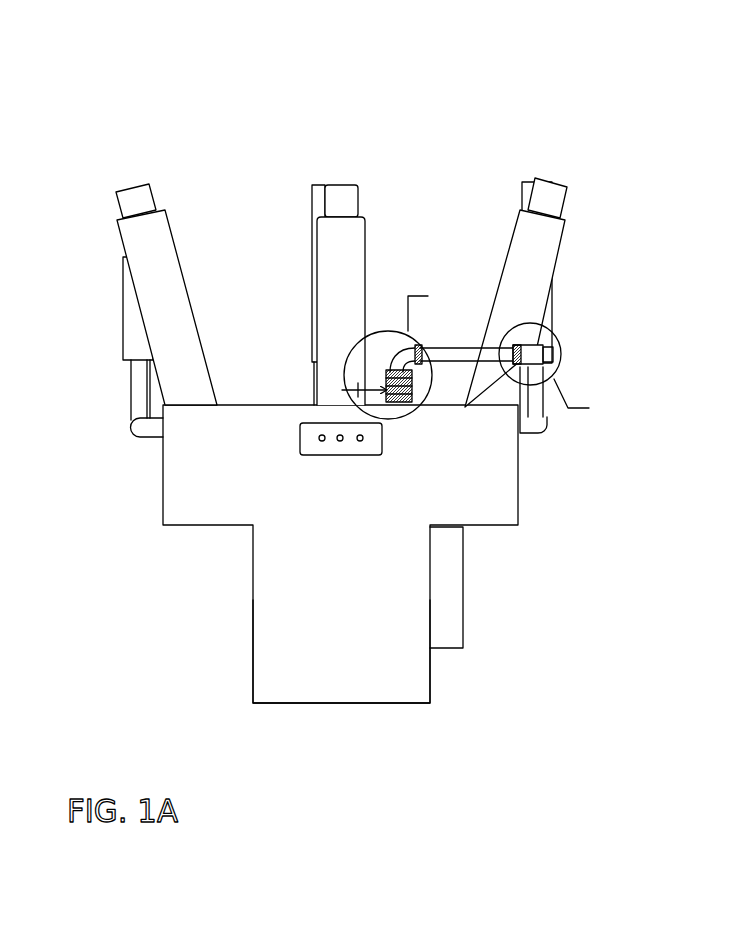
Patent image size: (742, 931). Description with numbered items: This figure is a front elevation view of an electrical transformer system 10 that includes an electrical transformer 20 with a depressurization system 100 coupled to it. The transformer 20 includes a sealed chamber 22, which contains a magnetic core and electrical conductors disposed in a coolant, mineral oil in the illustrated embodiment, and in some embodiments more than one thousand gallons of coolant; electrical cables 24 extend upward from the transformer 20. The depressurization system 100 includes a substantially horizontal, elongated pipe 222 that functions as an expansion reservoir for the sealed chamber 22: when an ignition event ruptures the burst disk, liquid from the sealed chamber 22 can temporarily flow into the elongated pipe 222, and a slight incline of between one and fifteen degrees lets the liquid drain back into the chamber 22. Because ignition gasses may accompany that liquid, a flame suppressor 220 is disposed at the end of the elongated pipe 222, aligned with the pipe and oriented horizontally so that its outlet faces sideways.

The electrical transformer system 10 is at (191, 101).
The electrical transformer 20 is at (186, 612).
The sealed chamber 22 is at (412, 690).
The electrical cables 24 is at (133, 233).
The depressurization system 100 is at (410, 268).
The flame suppressor 220 is at (551, 339).
The elongated pipe 222 is at (457, 350).